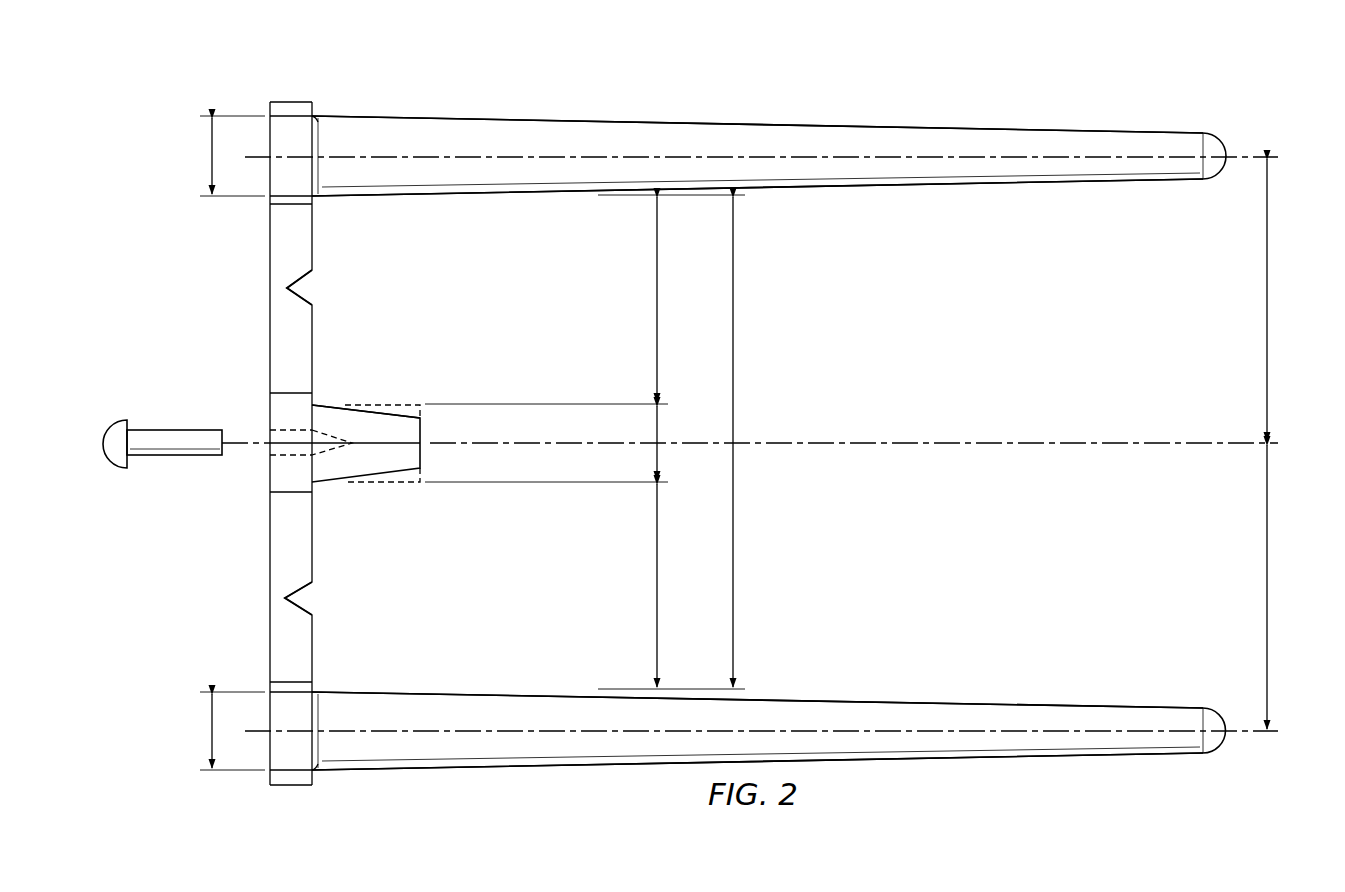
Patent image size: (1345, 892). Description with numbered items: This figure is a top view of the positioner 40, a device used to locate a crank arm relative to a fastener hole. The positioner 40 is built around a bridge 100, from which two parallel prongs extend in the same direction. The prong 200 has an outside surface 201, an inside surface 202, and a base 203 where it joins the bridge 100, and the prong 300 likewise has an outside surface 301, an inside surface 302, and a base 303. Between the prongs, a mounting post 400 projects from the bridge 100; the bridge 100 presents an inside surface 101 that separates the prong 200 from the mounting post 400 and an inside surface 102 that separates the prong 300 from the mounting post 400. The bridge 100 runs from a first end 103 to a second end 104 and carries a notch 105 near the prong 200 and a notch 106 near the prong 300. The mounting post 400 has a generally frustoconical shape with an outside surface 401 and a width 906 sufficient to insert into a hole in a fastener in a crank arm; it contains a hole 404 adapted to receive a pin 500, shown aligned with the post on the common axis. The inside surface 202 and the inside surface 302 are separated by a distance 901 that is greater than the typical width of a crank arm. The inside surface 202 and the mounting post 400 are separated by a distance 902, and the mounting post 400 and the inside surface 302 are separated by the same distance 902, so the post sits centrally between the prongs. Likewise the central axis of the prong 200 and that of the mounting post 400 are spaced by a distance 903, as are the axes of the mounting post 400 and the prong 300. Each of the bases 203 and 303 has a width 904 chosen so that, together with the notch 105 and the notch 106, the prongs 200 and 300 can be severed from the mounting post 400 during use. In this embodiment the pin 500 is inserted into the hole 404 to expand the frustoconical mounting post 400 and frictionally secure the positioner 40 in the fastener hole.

The positioner 40 is at (896, 94).
The bridge 100 is at (285, 246).
The inside surface 101 is at (312, 336).
The inside surface 102 is at (313, 552).
The first end 103 is at (290, 100).
The second end 104 is at (291, 788).
The notch 105 is at (300, 290).
The notch 106 is at (300, 600).
The prong 200 is at (769, 158).
The outside surface 201 is at (978, 128).
The inside surface 202 is at (1046, 184).
The base 203 is at (318, 136).
The prong 300 is at (769, 733).
The outside surface 301 is at (990, 756).
The inside surface 302 is at (1047, 708).
The base 303 is at (318, 748).
The mounting post 400 is at (321, 438).
The outside surface 401 is at (333, 404).
The hole 404 is at (290, 447).
The pin 500 is at (182, 428).
The distance 901 is at (734, 490).
The distance 902 is at (658, 300).
The distance 903 is at (1268, 300).
The width 904 is at (208, 160).
The width 906 is at (658, 442).